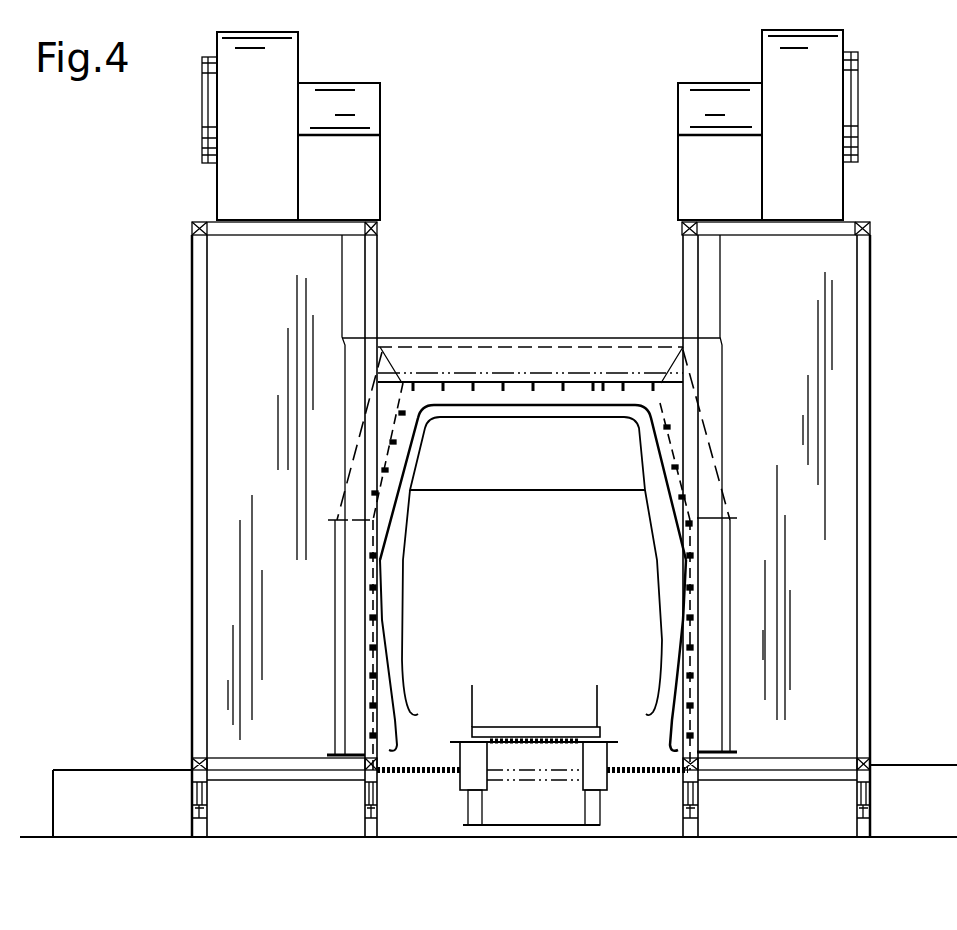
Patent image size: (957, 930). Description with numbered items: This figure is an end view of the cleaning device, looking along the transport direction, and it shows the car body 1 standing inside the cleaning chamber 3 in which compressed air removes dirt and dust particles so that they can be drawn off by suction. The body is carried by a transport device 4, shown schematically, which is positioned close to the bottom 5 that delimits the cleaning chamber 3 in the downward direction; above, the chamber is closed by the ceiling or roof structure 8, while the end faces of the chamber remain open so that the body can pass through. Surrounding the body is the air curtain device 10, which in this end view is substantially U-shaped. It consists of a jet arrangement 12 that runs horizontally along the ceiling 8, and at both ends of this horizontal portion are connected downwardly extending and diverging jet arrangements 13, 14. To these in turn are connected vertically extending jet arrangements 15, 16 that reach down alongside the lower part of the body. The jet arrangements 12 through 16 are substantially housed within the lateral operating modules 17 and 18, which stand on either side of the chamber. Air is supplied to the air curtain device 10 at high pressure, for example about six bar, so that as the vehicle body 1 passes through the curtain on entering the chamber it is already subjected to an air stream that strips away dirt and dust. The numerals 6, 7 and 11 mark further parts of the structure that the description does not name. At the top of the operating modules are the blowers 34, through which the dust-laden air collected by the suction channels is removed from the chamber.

The car body 1 is at (670, 608).
The cleaning chamber 3 is at (643, 395).
The transport device 4 is at (573, 722).
The bottom 5 is at (407, 777).
The guide rail 6 is at (373, 452).
The side wall 7 is at (688, 442).
The ceiling or roof structure 8 is at (443, 338).
The air curtain device 10 is at (680, 482).
The spray nozzles 11 is at (403, 443).
The jet arrangement 12 is at (603, 395).
The downwardly extending and diverging jet arrangement 13 is at (383, 493).
The downwardly extending and diverging jet arrangement 14 is at (673, 455).
The vertically extending jet arrangement 15 is at (373, 658).
The vertically extending jet arrangement 16 is at (690, 665).
The lateral operating module 17 is at (235, 363).
The lateral operating module 18 is at (833, 320).
The blower 34 is at (280, 63).